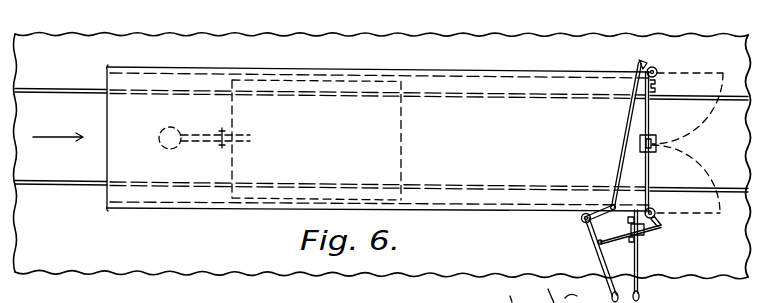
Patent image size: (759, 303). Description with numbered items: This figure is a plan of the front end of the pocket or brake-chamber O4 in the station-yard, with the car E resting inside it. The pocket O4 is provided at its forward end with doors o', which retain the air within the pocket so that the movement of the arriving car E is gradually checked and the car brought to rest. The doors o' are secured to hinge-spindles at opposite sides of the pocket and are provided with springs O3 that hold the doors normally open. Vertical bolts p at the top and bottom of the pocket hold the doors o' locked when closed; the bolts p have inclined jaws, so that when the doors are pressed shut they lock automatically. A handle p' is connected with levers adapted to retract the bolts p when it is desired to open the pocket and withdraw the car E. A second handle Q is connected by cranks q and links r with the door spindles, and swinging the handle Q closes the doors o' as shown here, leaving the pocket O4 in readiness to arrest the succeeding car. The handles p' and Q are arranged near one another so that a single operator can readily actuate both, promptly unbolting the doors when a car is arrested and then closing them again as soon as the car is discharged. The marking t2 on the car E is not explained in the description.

The car E is at (403, 138).
The pocket or brake-chamber O4 is at (489, 72).
The springs O3 is at (656, 82).
The doors o' is at (685, 142).
The vertical bolts p is at (658, 134).
The handle p' is at (649, 255).
The cranks q is at (655, 66).
The links r is at (617, 157).
The handle Q is at (603, 256).
The pin t2 is at (268, 139).